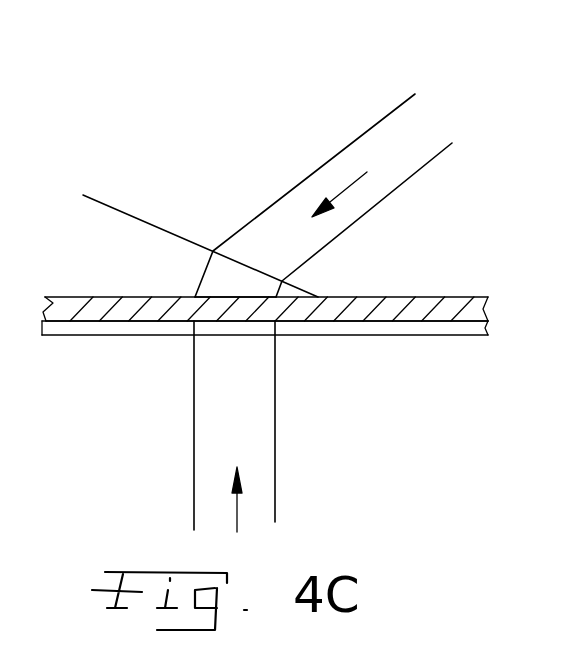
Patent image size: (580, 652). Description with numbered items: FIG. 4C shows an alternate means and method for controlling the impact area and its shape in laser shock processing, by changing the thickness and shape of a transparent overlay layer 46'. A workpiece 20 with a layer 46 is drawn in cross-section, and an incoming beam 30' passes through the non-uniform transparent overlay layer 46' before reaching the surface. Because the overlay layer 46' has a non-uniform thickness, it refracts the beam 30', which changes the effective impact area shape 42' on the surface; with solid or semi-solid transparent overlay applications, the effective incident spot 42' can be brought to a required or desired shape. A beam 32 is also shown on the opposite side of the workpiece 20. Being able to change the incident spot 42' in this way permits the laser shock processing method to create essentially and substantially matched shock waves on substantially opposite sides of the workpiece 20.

The substrate 20 is at (490, 308).
The thin film layer 46 is at (265, 352).
The non-uniform transparent overlay layer 46' is at (200, 217).
The effective impact area shape 42' is at (189, 277).
The incident laser beam 30' is at (341, 195).
The transmitted beam 32 is at (263, 463).